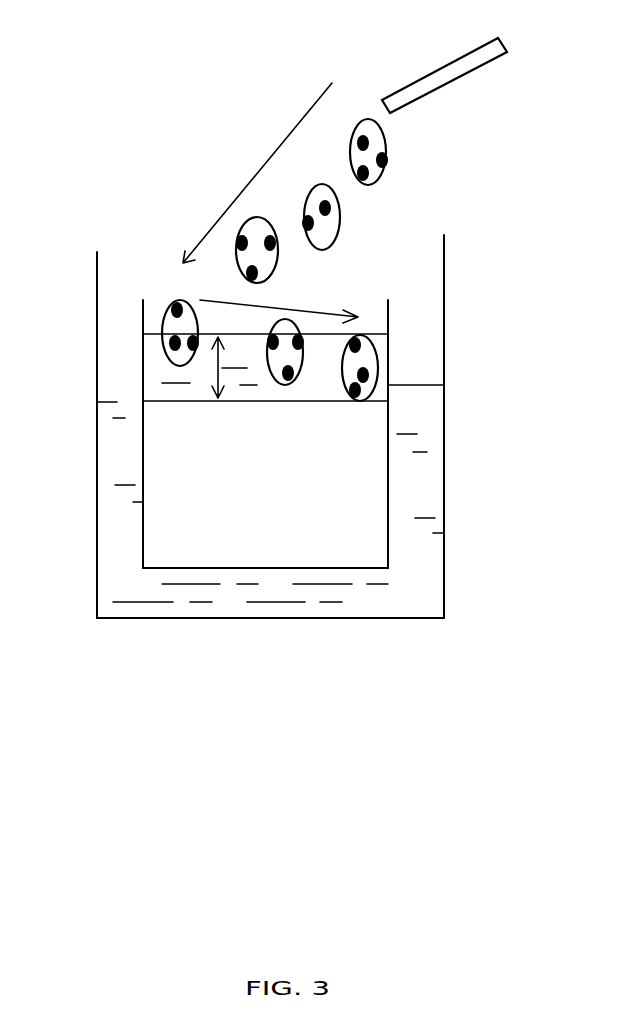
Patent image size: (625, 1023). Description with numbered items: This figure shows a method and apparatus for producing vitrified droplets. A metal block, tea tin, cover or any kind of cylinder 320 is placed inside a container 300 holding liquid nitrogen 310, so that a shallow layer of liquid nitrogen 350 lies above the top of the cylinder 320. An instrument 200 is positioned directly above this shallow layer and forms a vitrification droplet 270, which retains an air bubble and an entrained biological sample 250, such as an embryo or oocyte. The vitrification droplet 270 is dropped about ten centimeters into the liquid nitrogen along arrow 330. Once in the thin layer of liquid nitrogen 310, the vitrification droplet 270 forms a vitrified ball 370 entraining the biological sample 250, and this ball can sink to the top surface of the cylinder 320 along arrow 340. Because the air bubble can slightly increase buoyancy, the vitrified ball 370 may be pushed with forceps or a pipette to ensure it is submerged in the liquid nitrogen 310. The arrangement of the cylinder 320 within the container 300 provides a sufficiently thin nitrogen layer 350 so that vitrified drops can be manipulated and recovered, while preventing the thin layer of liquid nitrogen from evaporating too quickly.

The instrument 200 is at (482, 51).
The biological sample 250 is at (370, 142).
The vitrification droplet 270 is at (370, 118).
The container 300 is at (97, 568).
The liquid nitrogen 310 is at (117, 452).
The cylinder 320 is at (388, 485).
The arrow 330 is at (257, 173).
The arrow 340 is at (279, 253).
The shallow layer of liquid nitrogen 350 is at (230, 370).
The vitrified ball 370 is at (173, 307).